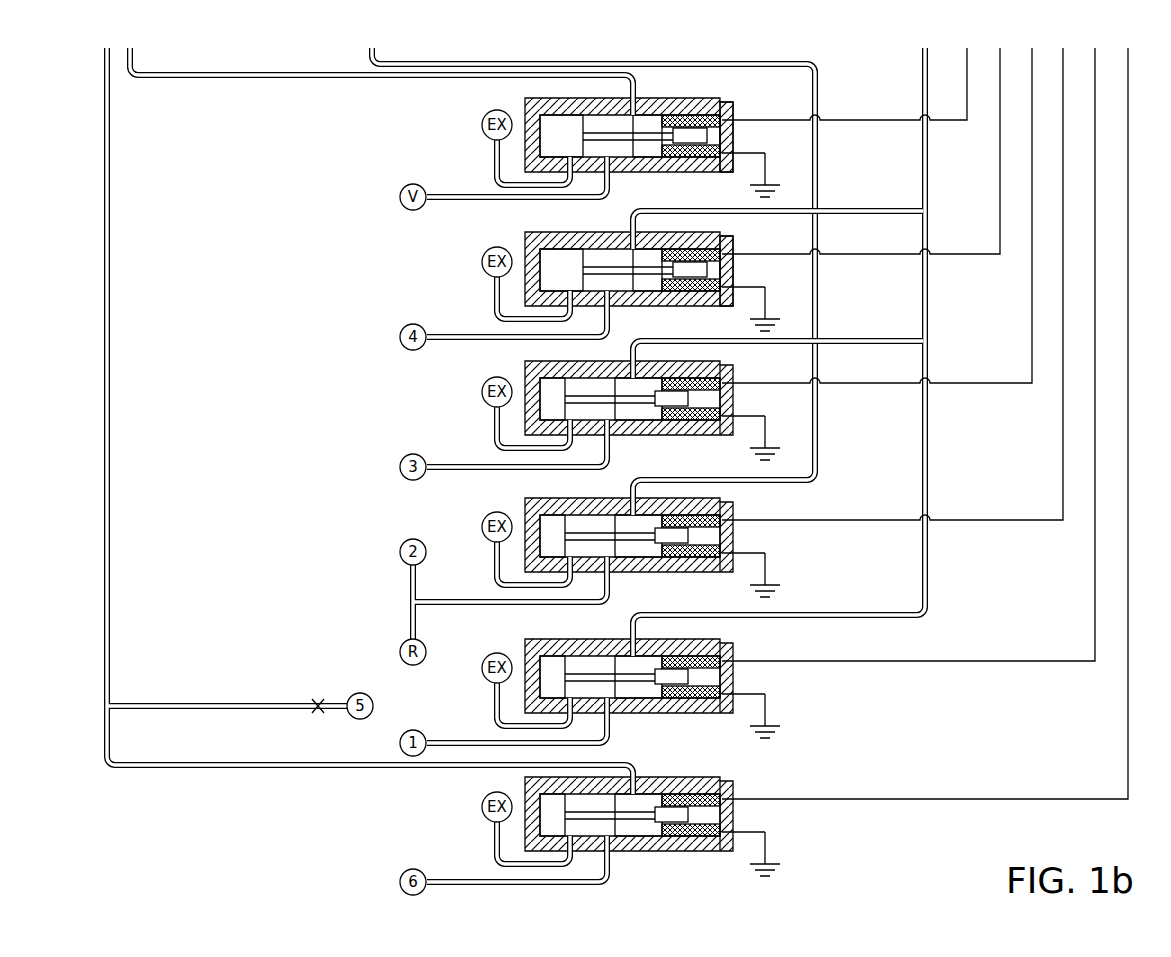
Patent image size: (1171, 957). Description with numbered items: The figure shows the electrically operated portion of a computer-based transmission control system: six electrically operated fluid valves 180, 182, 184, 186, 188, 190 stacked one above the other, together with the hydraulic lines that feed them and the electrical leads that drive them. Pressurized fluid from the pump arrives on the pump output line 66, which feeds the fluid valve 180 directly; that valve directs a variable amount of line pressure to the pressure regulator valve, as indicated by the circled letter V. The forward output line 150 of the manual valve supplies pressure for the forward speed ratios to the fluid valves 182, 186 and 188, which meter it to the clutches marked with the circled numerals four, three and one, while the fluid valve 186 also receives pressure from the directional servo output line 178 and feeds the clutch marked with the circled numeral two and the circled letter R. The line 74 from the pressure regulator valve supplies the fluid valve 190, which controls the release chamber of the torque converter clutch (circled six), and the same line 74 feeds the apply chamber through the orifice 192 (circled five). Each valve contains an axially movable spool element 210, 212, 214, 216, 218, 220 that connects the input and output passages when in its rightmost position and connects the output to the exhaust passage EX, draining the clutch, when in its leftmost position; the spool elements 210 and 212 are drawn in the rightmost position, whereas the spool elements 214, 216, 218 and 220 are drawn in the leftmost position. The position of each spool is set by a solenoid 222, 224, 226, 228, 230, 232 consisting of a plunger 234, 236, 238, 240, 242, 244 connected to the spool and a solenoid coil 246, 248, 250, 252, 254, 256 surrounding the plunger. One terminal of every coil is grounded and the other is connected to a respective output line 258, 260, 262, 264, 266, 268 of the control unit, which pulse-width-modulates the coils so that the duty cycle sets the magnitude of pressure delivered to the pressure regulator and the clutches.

The pump output line 66 is at (150, 80).
The line 74 is at (110, 278).
The forward output line 150 is at (370, 62).
The directional servo output line 178 is at (636, 105).
The fluid valve 180 is at (528, 105).
The fluid valve 182 is at (528, 238).
The fluid valve 184 is at (528, 370).
The fluid valve 186 is at (528, 507).
The fluid valve 188 is at (530, 648).
The fluid valve 190 is at (528, 797).
The orifice 192 is at (320, 702).
The spool element 210 is at (714, 88).
The spool element 212 is at (613, 243).
The spool element 214 is at (595, 373).
The spool element 216 is at (596, 508).
The spool element 218 is at (596, 646).
The spool element 220 is at (640, 852).
The solenoid 222 is at (735, 130).
The solenoid 224 is at (735, 265).
The solenoid 226 is at (735, 395).
The solenoid 228 is at (735, 535).
The solenoid 230 is at (735, 677).
The solenoid 232 is at (737, 810).
The plunger 234 is at (688, 144).
The plunger 236 is at (733, 244).
The plunger 238 is at (676, 421).
The plunger 240 is at (675, 558).
The plunger 242 is at (676, 700).
The plunger 244 is at (672, 838).
The solenoid coil 246 is at (733, 102).
The solenoid coil 248 is at (700, 296).
The solenoid coil 250 is at (685, 422).
The solenoid coil 252 is at (683, 565).
The solenoid coil 254 is at (685, 705).
The solenoid coil 256 is at (705, 845).
The output line 258 is at (953, 122).
The output line 260 is at (964, 257).
The output line 262 is at (995, 388).
The output line 264 is at (892, 318).
The output line 266 is at (993, 664).
The output line 268 is at (918, 797).